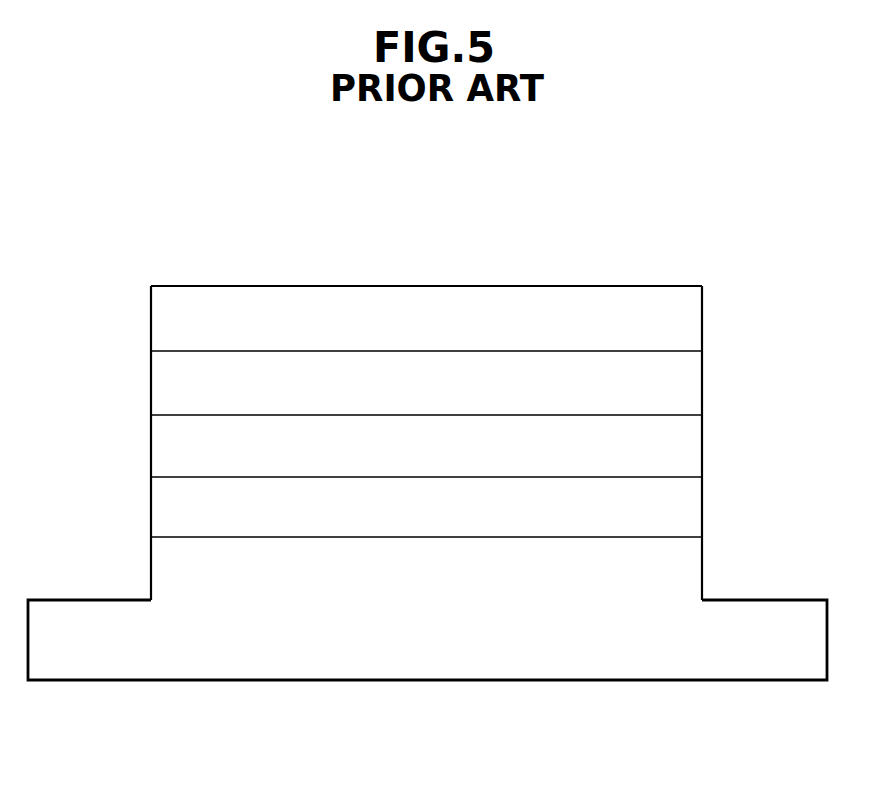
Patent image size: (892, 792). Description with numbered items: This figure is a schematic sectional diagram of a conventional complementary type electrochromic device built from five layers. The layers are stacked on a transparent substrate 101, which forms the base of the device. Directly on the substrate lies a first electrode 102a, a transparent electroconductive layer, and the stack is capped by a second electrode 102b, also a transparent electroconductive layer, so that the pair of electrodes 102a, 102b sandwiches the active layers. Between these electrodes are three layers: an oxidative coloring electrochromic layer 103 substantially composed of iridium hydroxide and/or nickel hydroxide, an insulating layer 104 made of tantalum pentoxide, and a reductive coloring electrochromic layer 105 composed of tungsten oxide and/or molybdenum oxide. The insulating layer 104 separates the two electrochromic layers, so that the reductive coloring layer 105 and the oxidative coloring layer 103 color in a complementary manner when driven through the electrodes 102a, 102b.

The transparent substrate 101 is at (757, 610).
The electrode 102a is at (174, 569).
The oxidative coloring electrochromic layer 103 is at (178, 511).
The insulating layer 104 is at (178, 449).
The reductive coloring electrochromic layer 105 is at (182, 386).
The electrode 102b is at (176, 321).